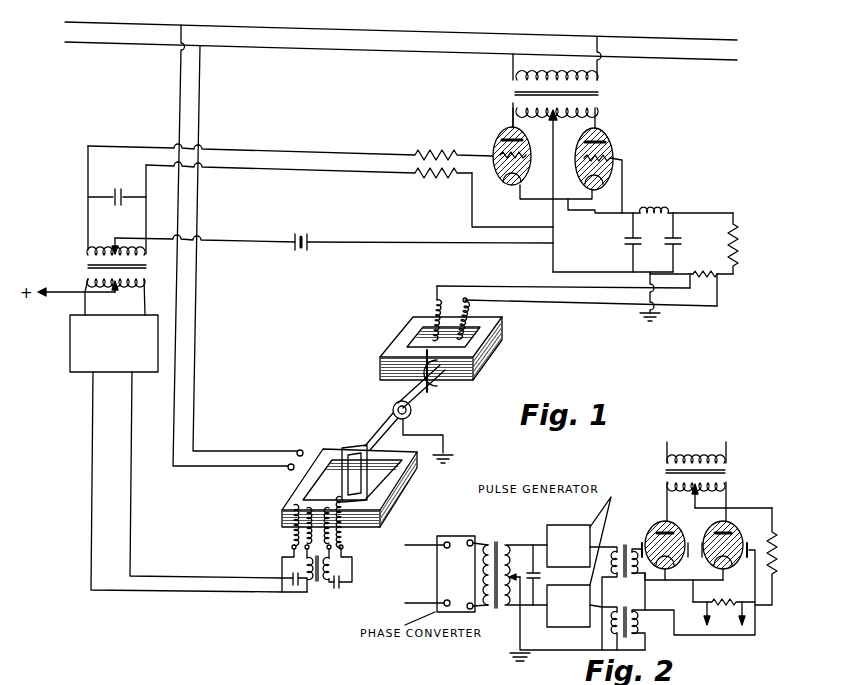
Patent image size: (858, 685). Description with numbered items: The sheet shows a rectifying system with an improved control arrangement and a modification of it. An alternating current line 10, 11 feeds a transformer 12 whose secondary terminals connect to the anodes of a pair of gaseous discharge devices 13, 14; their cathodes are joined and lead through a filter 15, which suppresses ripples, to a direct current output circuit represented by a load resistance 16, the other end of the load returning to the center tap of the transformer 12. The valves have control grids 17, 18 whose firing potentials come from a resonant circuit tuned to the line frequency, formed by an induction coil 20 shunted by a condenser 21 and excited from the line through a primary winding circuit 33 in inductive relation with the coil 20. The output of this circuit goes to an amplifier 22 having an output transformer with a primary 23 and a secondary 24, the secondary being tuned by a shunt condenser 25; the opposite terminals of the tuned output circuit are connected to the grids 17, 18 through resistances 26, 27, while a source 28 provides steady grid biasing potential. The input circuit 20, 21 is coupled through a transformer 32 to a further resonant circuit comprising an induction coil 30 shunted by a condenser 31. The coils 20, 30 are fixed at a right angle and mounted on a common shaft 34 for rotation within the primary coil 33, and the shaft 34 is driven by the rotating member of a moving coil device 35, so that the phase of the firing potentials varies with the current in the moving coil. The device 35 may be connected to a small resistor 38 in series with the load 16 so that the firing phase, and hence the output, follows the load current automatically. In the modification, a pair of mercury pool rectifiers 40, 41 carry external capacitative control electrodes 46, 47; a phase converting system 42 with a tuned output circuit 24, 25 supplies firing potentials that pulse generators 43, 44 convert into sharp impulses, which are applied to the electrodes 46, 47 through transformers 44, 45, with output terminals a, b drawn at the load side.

In FIG. 1, the alternating current line 10 is at (668, 40).
In FIG. 1, the alternating current line 11 is at (663, 63).
In FIG. 1, the transformer 12 is at (602, 95).
In FIG. 2, the transformer 12 is at (726, 470).
In FIG. 1, the gaseous discharge device 13 is at (508, 128).
In FIG. 1, the gaseous discharge device 14 is at (606, 143).
In FIG. 1, the filter 15 is at (660, 236).
In FIG. 1, the load resistance 16 is at (739, 248).
In FIG. 2, the load resistance 16 is at (775, 558).
In FIG. 1, the control grid 17 is at (500, 143).
In FIG. 1, the control grid 18 is at (614, 158).
In FIG. 1, the induction coil 20 is at (318, 487).
In FIG. 1, the condenser 21 is at (294, 592).
In FIG. 1, the amplifier 22 is at (70, 336).
In FIG. 1, the primary 23 is at (88, 266).
In FIG. 2, the primary 23 is at (488, 545).
In FIG. 1, the secondary 24 is at (85, 251).
In FIG. 2, the secondary 24 is at (507, 545).
In FIG. 1, the shunt condenser 25 is at (125, 180).
In FIG. 2, the shunt condenser 25 is at (541, 577).
In FIG. 1, the resistance 26 is at (418, 154).
In FIG. 1, the resistance 27 is at (430, 175).
In FIG. 1, the source of grid biasing potential 28 is at (302, 233).
In FIG. 1, the induction coil 30 is at (366, 444).
In FIG. 1, the condenser 31 is at (342, 588).
In FIG. 1, the transformer 32 is at (318, 583).
In FIG. 1, the primary winding circuit 33 is at (395, 484).
In FIG. 1, the shaft 34 is at (410, 388).
In FIG. 1, the moving coil device 35 is at (395, 337).
In FIG. 1, the resistor 38 is at (714, 271).
In FIG. 2, the resistor 38 is at (736, 601).
In FIG. 2, the mercury pool rectifier 40 is at (672, 531).
In FIG. 2, the mercury pool rectifier 41 is at (728, 531).
In FIG. 2, the phase converting system 42 is at (464, 577).
In FIG. 2, the pulse generator 43 is at (578, 554).
In FIG. 2, the pulse generator 44 is at (578, 614).
In FIG. 2, the transformer 45 is at (624, 610).
In FIG. 2, the control electrode 46 is at (641, 541).
In FIG. 2, the control electrode 47 is at (748, 546).
In FIG. 2, the output terminal a is at (708, 620).
In FIG. 2, the output terminal b is at (743, 622).